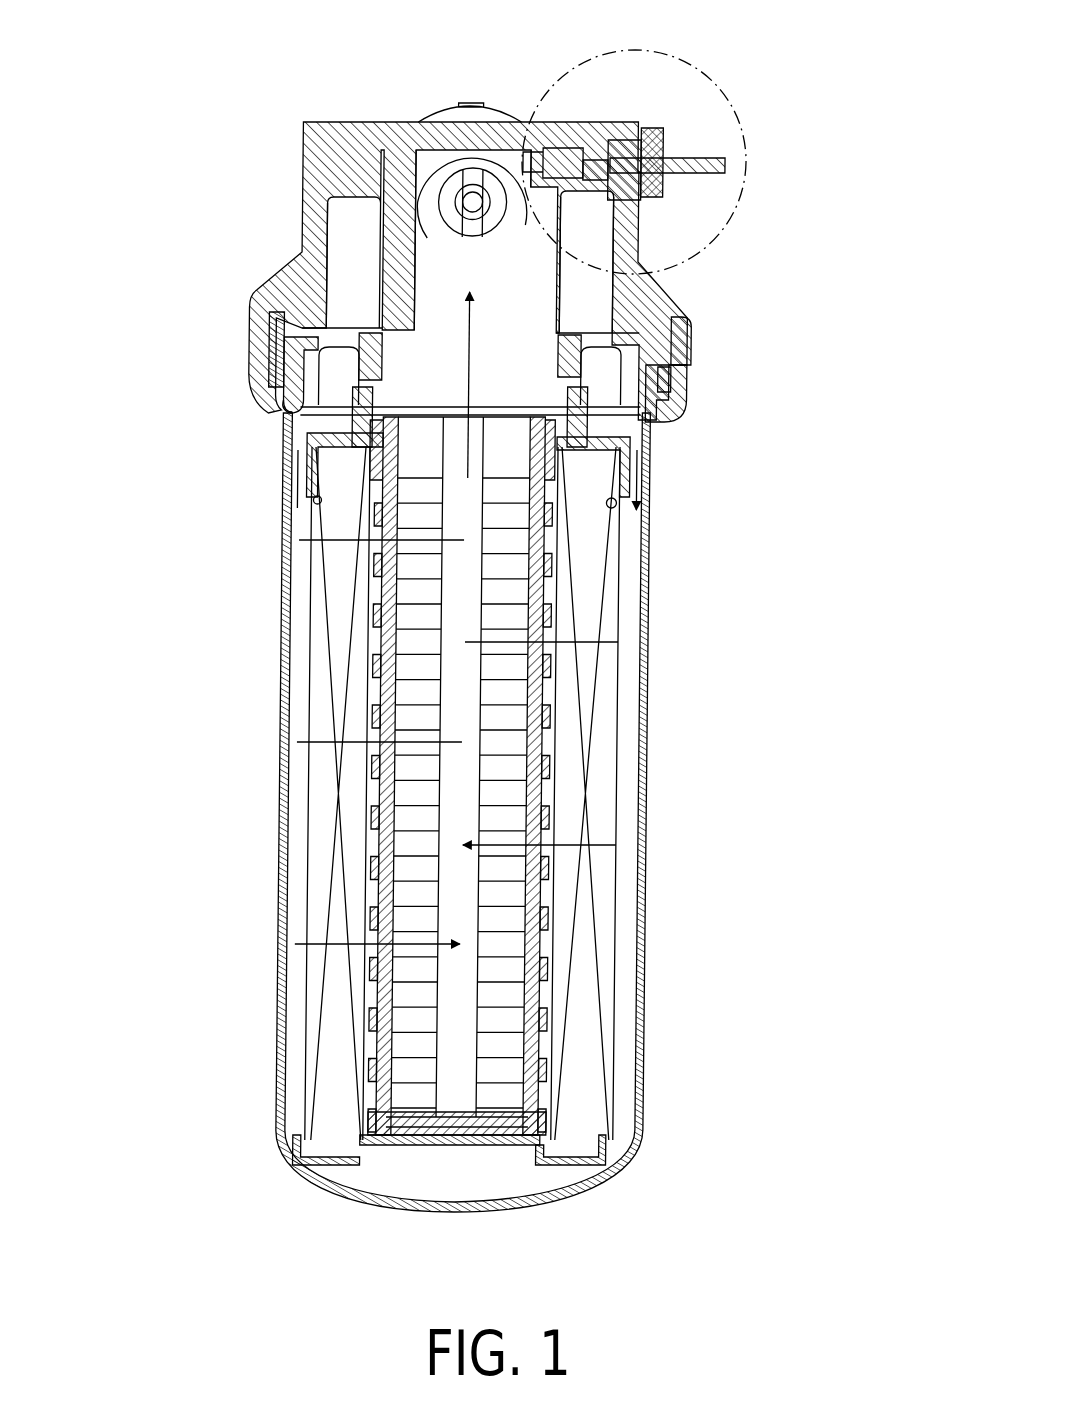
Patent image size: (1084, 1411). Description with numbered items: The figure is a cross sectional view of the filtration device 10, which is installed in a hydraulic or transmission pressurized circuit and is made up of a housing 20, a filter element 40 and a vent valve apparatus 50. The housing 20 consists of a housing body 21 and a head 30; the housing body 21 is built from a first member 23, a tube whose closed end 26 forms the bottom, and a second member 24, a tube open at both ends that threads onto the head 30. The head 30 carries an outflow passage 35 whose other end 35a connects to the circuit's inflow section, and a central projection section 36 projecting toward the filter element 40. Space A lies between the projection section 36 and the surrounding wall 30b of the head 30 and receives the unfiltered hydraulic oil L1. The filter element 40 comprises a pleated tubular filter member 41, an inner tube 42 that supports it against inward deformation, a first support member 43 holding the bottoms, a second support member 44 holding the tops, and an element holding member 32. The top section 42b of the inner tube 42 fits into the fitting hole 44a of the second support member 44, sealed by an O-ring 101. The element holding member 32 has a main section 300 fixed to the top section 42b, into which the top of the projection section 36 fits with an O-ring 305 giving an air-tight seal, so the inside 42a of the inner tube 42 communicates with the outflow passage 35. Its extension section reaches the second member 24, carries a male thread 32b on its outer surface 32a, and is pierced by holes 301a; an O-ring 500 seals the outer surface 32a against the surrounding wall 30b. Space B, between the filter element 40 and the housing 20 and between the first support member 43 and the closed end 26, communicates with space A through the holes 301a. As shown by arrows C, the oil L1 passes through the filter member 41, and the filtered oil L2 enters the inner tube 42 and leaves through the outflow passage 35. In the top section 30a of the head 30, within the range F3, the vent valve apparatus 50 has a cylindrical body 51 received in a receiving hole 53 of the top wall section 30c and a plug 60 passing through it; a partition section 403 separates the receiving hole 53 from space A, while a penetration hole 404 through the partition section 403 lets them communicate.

The filtration device 10 is at (652, 568).
The housing 20 is at (778, 325).
The housing body 21 is at (690, 360).
The first member 23 is at (648, 838).
The second member 24 is at (672, 410).
The closed end 26 is at (500, 1213).
The head 30 is at (688, 312).
The top section 30a is at (595, 122).
The surrounding wall 30b is at (262, 300).
The top wall section 30c is at (562, 122).
The holes 301a is at (270, 290).
The element holding member 32 is at (285, 405).
The outer surface 32a is at (283, 385).
The male thread 32b is at (672, 383).
The outflow passage 35 is at (430, 270).
The other end of outflow passage 35a is at (490, 150).
The projection section 36 is at (372, 358).
The main section 300 is at (372, 392).
The O-ring 305 is at (355, 368).
The partition section 403 is at (588, 190).
The penetration hole 404 is at (600, 185).
The filter element 40 is at (312, 676).
The filter member 41 is at (318, 640).
The inner tube 42 is at (555, 668).
The inside of inner tube 42a is at (510, 795).
The top section 42b is at (375, 445).
The first support member 43 is at (608, 1168).
The second support member 44 is at (612, 505).
The fitting hole 44a is at (612, 508).
The vent valve apparatus 50 is at (650, 128).
The body 51 is at (658, 142).
The receiving hole 53 is at (575, 185).
The plug 60 is at (712, 175).
The O-ring 101 is at (320, 500).
The O-ring 500 is at (270, 345).
The space A is at (340, 210).
The space B is at (642, 730).
The arrows C is at (300, 750).
The hydraulic oil to be filtered L1 is at (296, 472).
The filtered hydraulic oil L2 is at (545, 350).
The range F3 is at (735, 98).